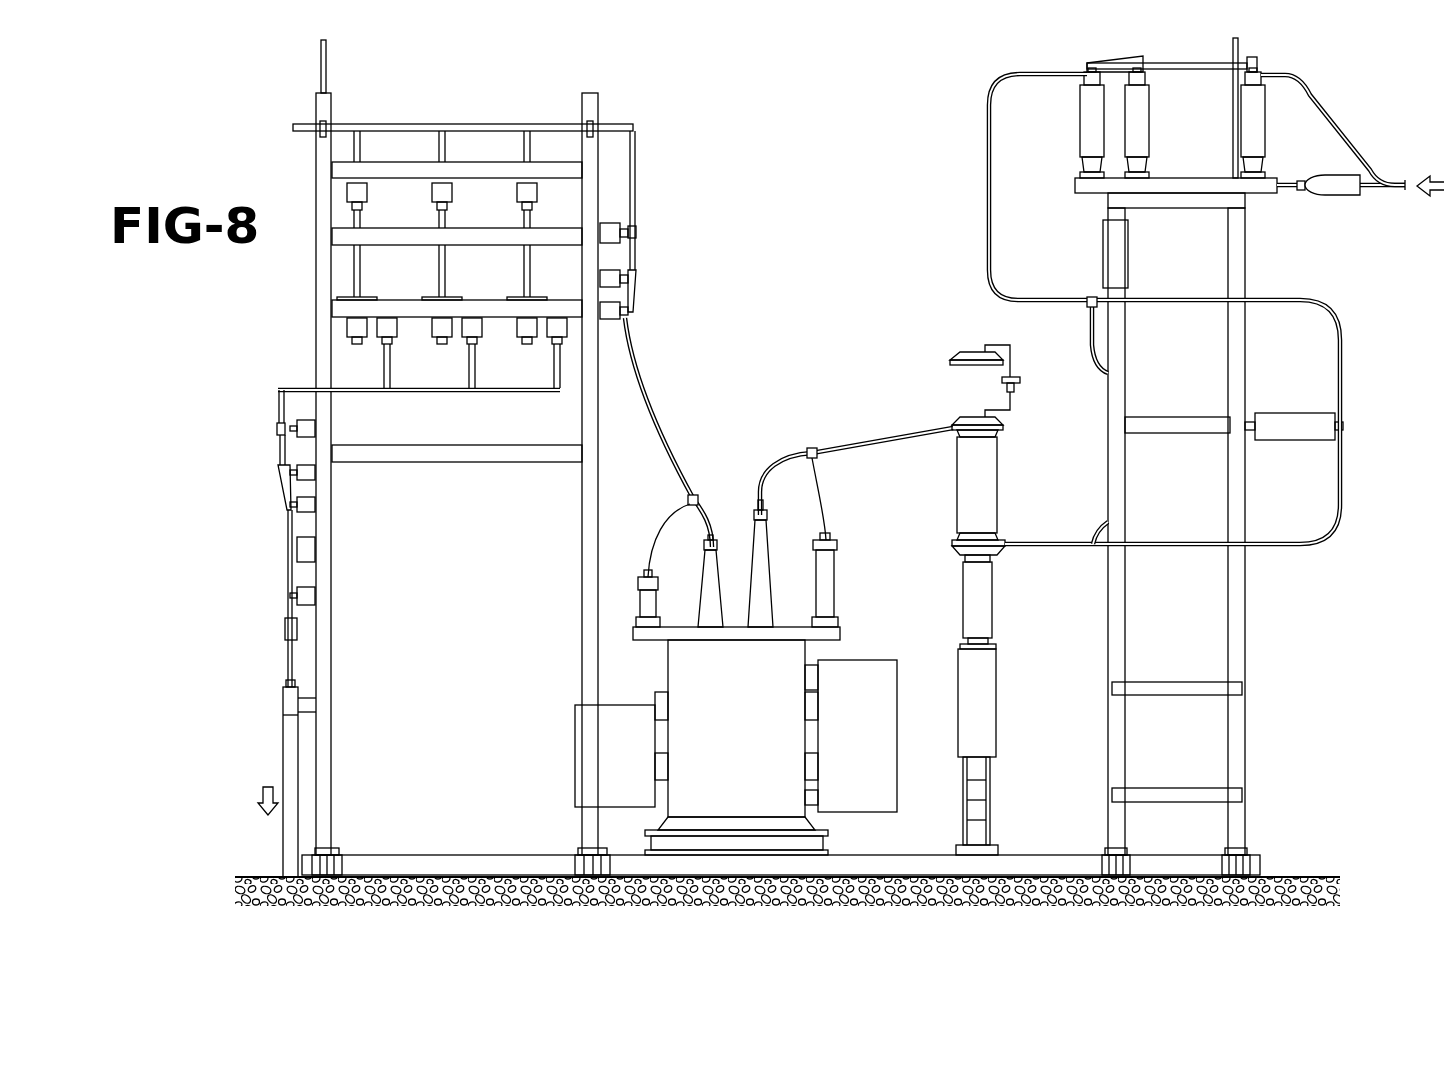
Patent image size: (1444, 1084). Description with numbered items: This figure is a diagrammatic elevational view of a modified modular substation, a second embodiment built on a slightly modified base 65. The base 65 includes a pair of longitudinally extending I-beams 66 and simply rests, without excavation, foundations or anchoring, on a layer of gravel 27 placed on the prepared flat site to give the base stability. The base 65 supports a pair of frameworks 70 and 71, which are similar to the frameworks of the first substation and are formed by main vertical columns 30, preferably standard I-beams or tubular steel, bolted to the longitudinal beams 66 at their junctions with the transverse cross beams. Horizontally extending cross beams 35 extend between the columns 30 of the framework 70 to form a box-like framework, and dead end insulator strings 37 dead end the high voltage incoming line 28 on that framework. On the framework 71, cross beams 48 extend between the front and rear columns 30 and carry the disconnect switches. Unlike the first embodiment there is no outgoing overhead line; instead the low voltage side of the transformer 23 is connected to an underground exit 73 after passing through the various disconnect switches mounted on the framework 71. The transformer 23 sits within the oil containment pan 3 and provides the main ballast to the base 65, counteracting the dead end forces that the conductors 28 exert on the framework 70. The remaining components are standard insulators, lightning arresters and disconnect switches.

The oil containment pan 3 is at (765, 826).
The transformer 23 is at (752, 721).
The layer of gravel 27 is at (258, 877).
The incoming line 28 is at (1388, 192).
The main vertical columns 30 is at (328, 640).
The cross beams 35 is at (1177, 428).
The dead end insulator strings 37 is at (1322, 194).
The cross beams 48 is at (402, 170).
The base 65 is at (1272, 852).
The longitudinally extending I-beams 66 is at (487, 860).
The framework 70 is at (1253, 718).
The framework 71 is at (312, 353).
The underground exit 73 is at (290, 742).